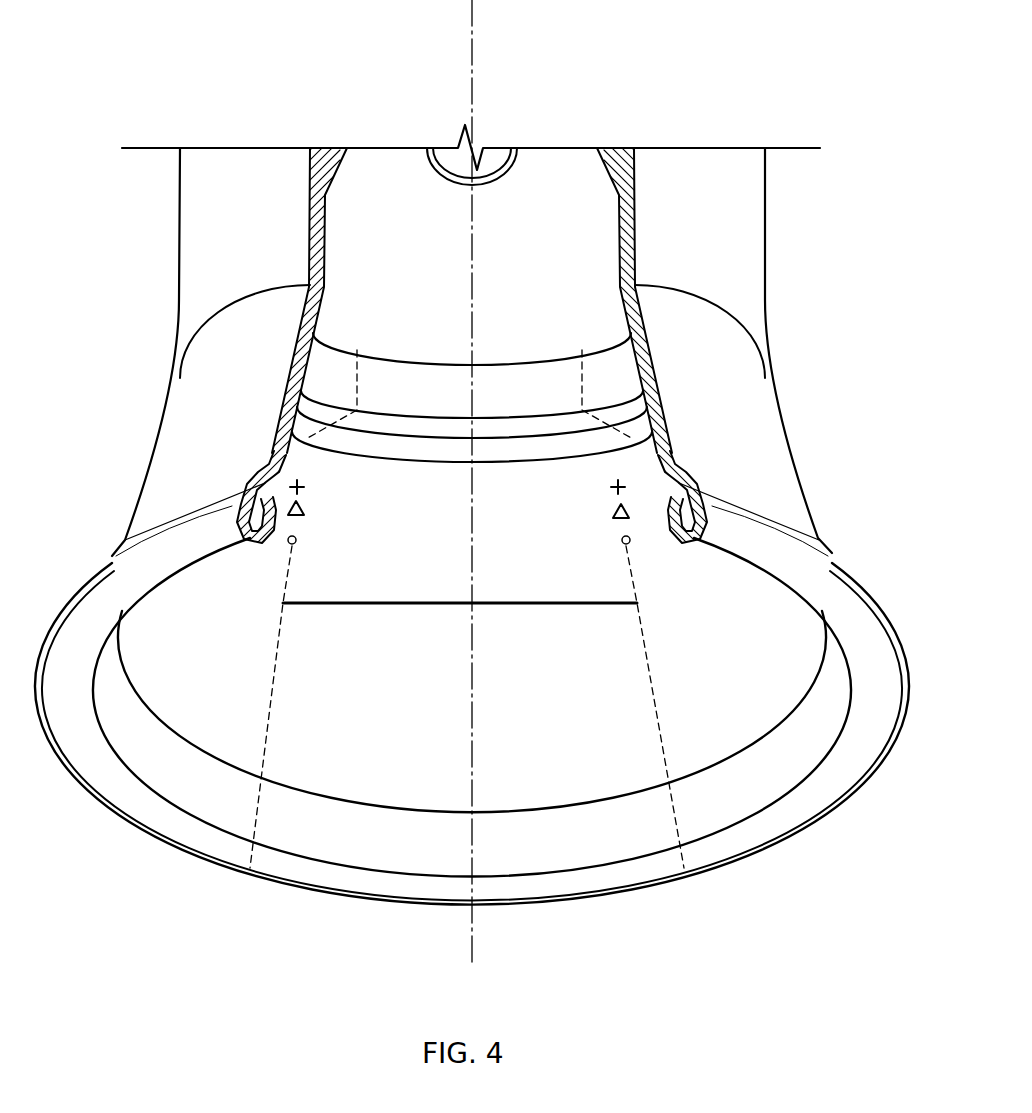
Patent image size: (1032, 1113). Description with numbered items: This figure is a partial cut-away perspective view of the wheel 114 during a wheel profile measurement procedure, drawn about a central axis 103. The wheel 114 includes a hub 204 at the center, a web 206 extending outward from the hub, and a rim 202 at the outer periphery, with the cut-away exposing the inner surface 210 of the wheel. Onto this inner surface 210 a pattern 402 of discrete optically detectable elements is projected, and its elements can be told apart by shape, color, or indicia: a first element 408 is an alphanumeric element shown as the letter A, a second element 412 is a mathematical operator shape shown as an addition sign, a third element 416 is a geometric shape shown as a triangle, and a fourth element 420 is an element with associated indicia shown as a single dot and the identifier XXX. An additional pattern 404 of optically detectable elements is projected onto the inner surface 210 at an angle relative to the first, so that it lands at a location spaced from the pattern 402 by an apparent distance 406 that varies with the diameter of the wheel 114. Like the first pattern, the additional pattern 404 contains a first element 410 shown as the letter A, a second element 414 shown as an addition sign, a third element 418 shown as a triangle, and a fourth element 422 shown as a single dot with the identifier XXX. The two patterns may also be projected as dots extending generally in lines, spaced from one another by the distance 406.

The central axis 103 is at (480, 46).
The wheel 114 is at (795, 286).
The rim 202 is at (796, 444).
The hub 204 is at (555, 213).
The web 206 is at (597, 317).
The inner surface 210 is at (597, 763).
The pattern of discrete optically detectable elements 402 is at (296, 636).
The additional pattern of optically detectable elements 404 is at (660, 660).
The apparent distance 406 is at (566, 606).
The first element 408 is at (308, 462).
The first element 410 is at (603, 466).
The second element 412 is at (306, 488).
The second element 414 is at (610, 490).
The third element 416 is at (308, 510).
The third element 418 is at (612, 516).
The fourth element 420 is at (352, 562).
The fourth element 422 is at (570, 562).